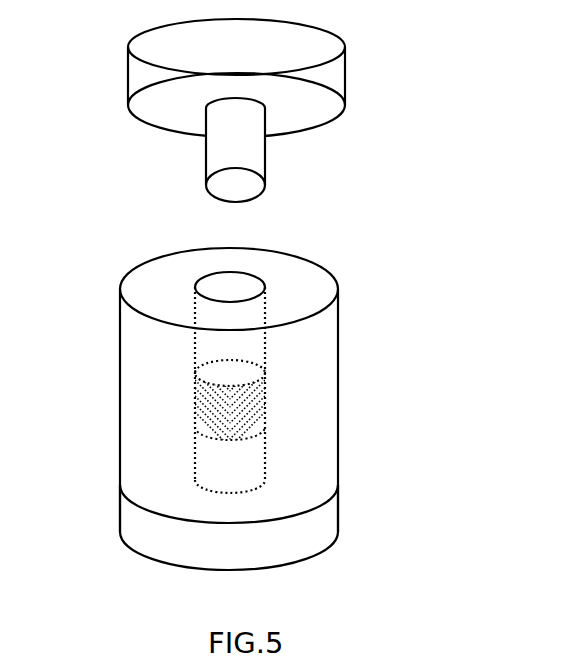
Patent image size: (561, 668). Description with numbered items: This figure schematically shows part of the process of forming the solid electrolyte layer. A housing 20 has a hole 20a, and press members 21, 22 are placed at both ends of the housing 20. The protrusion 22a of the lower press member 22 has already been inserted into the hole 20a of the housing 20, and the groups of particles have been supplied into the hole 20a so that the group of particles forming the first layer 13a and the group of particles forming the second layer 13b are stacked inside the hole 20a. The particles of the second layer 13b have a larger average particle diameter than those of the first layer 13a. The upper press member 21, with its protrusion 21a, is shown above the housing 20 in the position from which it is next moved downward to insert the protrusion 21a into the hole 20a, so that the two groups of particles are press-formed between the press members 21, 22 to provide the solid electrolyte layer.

The press member 21 is at (345, 73).
The protrusion 21a is at (245, 150).
The housing 20 is at (338, 390).
The hole 20a is at (265, 338).
The press member 22 is at (310, 530).
The protrusion 22a is at (240, 470).
The first layer 13a is at (197, 393).
The second layer 13b is at (197, 423).